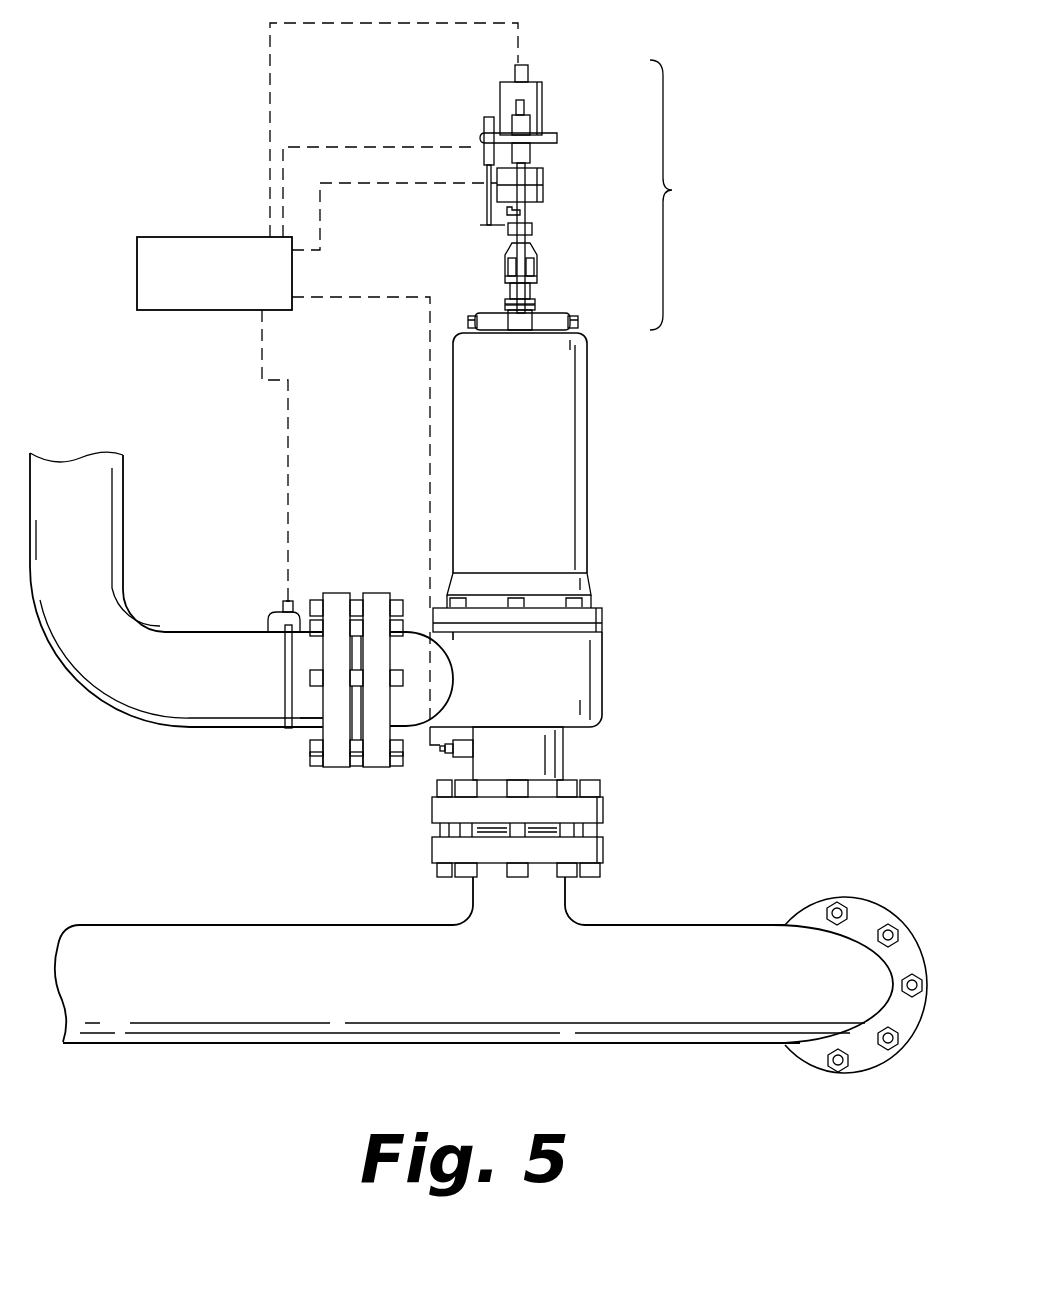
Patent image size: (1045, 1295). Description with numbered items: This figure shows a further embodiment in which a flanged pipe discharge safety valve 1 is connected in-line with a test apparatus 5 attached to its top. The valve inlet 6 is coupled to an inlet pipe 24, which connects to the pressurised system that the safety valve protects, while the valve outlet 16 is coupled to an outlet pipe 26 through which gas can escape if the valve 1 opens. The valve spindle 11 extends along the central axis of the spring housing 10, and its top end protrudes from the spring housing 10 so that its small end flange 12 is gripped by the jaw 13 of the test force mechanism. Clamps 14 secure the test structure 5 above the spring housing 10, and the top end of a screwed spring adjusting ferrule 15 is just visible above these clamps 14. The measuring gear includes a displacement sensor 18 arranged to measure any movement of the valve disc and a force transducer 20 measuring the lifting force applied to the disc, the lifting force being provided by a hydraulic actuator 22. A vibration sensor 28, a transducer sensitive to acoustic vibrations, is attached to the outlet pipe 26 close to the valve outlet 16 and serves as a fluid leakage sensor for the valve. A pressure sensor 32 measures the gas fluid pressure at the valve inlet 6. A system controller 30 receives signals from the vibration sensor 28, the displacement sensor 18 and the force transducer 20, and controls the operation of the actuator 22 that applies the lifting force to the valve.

The safety valve 1 is at (548, 508).
The test structure 5 is at (669, 195).
The valve inlet 6 is at (552, 748).
The spring housing 10 is at (590, 375).
The valve spindle 11 is at (507, 292).
The small end flange 12 is at (500, 266).
The jaw 13 is at (542, 250).
The clamps 14 is at (574, 320).
The screwed spring adjusting ferrule 15 is at (540, 302).
The valve outlet 16 is at (421, 632).
The displacement sensor 18 is at (480, 157).
The force transducer 20 is at (548, 180).
The hydraulic actuator 22 is at (548, 105).
The inlet pipe 24 is at (545, 905).
The outlet pipe 26 is at (218, 712).
The vibration sensor 28 is at (276, 614).
The system controller 30 is at (185, 260).
The pressure sensor 32 is at (458, 757).